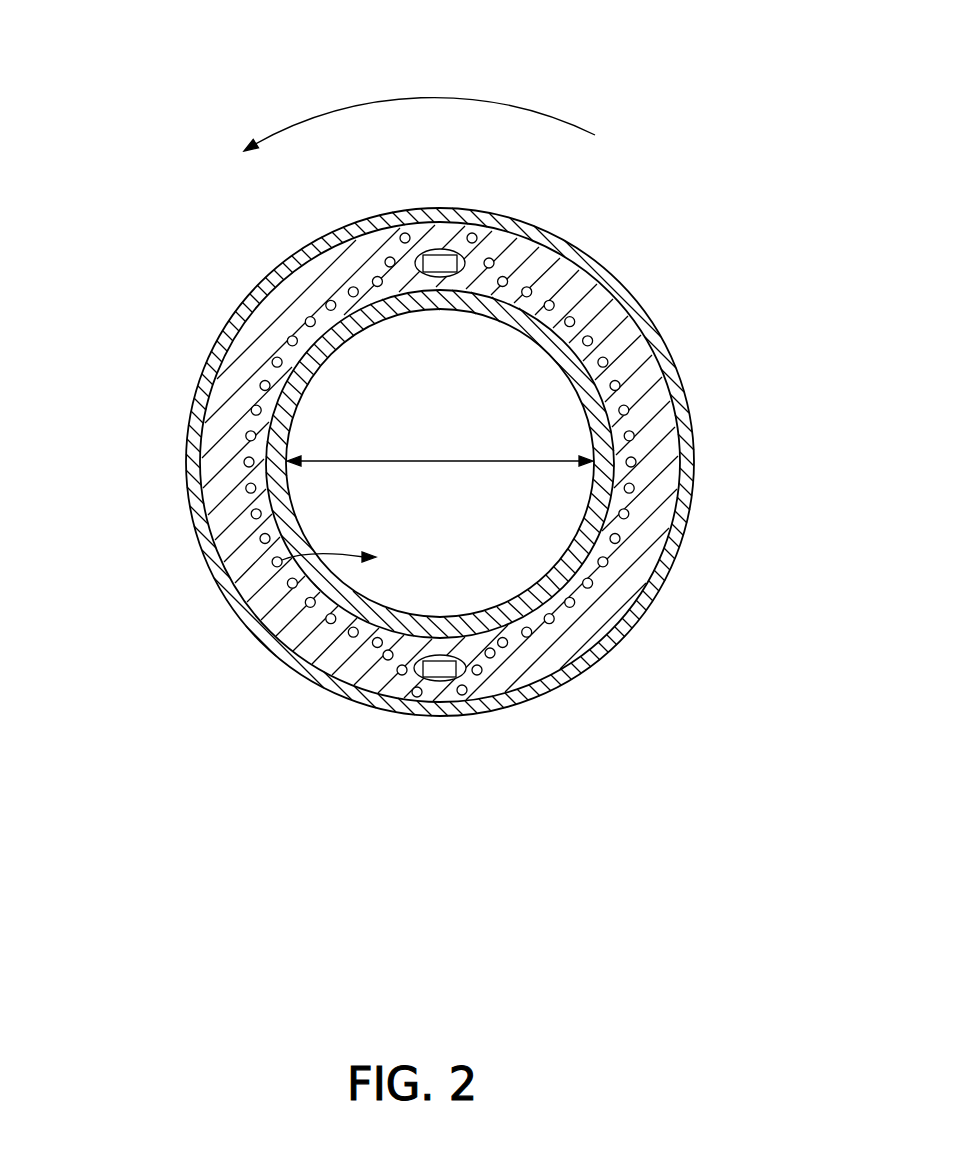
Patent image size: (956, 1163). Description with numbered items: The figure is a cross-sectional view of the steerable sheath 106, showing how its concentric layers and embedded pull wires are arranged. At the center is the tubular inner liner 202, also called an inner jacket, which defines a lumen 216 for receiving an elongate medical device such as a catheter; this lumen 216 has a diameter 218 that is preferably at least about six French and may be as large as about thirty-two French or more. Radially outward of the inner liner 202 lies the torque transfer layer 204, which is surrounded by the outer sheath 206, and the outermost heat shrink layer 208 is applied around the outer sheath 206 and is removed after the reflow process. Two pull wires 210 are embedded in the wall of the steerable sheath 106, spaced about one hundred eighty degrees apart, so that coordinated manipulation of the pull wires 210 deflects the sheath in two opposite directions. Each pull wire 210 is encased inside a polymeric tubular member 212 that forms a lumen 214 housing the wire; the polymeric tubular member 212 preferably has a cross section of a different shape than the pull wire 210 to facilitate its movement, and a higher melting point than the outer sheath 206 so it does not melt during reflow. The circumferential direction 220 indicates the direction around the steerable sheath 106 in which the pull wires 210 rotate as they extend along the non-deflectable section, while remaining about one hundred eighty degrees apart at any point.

The steerable sheath 106 is at (190, 192).
The tubular inner liner 202 is at (582, 549).
The torque transfer layer 204 is at (629, 511).
The outer sheath 206 is at (629, 408).
The heat shrink layer 208 is at (640, 310).
The pull wires 210 is at (456, 679).
The polymeric tubular member 212 is at (440, 682).
The lumen 214 is at (418, 682).
The lumen 216 is at (282, 560).
The diameter 218 is at (437, 458).
The circumferential direction 220 is at (432, 92).